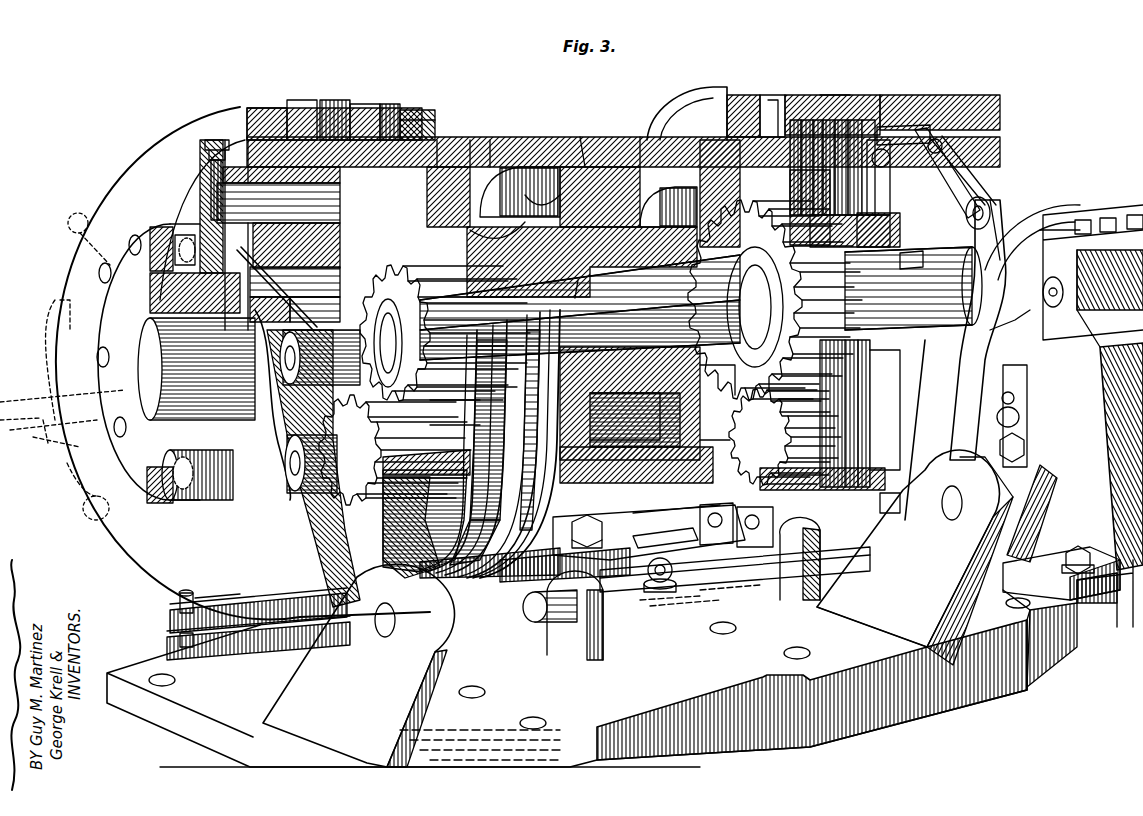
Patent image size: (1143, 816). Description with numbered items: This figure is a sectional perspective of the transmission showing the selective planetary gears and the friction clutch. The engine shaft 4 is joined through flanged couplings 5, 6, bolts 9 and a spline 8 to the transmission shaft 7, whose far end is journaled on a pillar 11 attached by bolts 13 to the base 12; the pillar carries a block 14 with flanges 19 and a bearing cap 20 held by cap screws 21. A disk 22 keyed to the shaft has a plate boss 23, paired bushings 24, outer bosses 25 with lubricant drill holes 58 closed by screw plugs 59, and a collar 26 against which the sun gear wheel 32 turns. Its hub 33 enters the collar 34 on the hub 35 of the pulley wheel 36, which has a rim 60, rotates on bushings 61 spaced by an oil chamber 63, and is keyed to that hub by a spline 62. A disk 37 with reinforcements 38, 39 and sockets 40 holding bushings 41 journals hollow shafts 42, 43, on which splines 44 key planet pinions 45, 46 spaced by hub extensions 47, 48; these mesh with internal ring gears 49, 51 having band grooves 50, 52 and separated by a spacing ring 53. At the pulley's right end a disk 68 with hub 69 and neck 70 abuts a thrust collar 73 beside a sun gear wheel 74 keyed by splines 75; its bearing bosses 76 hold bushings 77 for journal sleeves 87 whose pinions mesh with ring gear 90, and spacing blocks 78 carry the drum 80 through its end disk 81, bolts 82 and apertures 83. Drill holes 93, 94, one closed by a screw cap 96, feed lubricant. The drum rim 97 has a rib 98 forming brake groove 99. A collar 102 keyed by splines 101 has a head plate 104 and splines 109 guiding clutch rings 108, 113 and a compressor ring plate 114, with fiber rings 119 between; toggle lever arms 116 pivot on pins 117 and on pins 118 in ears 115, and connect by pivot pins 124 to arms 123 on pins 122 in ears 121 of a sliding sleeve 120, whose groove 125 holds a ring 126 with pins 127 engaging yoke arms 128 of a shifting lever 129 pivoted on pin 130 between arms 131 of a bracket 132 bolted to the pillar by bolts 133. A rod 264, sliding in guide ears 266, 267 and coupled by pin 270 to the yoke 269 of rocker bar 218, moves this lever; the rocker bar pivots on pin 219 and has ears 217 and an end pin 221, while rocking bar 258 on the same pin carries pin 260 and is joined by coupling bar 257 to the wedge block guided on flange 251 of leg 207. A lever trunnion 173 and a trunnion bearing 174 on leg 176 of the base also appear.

The phantom line 4 is at (20, 330).
The phantom coupling 5 is at (53, 389).
The housing boss 6 is at (150, 240).
The flange 7 is at (148, 383).
The hub 8 is at (170, 345).
The bolt holes 9 is at (85, 364).
The brake lever 11 is at (930, 375).
The base plate 12 is at (930, 705).
The nut 13 is at (1080, 546).
The bearing housing 14 is at (1093, 276).
The end plate 19 is at (1115, 456).
The bolt 20 is at (1110, 218).
The bolt 21 is at (1132, 214).
The housing wall 22 is at (240, 120).
The housing cover 23 is at (250, 112).
The housing side wall 24 is at (200, 183).
The stud 25 is at (215, 500).
The rod 26 is at (285, 296).
The pinion hub 32 is at (340, 325).
The opening 33 is at (497, 232).
The window 34 is at (510, 205).
The window rim 35 is at (542, 207).
The housing top 36 is at (560, 140).
The cap 37 is at (400, 112).
The cap flange 38 is at (400, 125).
The bolt 39 is at (470, 140).
The bolt 40 is at (492, 140).
The bolt 41 is at (440, 140).
The brake band 42 is at (275, 318).
The housing wall 43 is at (200, 198).
The gear hub 44 is at (290, 490).
The pinion 45 is at (500, 315).
The gear shaft 46 is at (470, 390).
The gear shaft 47 is at (471, 376).
The gear 48 is at (470, 410).
The pedestal 49 is at (270, 108).
The bolt 50 is at (300, 108).
The bolt 51 is at (392, 104).
The bolt 52 is at (366, 104).
The bolt 53 is at (333, 100).
The bolt shank 58 is at (210, 170).
The bolt head 59 is at (205, 140).
The housing joint 60 is at (600, 138).
The main shaft 61 is at (640, 280).
The collar 62 is at (380, 300).
The shaft section 63 is at (579, 299).
The dome cover 68 is at (705, 87).
The dome flange 69 is at (686, 119).
The housing rib 70 is at (640, 138).
The opening 73 is at (668, 207).
The output shaft 74 is at (872, 282).
The bearing collar 75 is at (735, 292).
The bearing block 76 is at (712, 420).
The bearing block 77 is at (715, 385).
The gear 78 is at (775, 300).
The cap 80 is at (930, 112).
The bracket 81 is at (805, 95).
The brake disc 82 is at (850, 120).
The cap bolt 83 is at (835, 95).
The bearing opening 87 is at (636, 419).
The cap block 90 is at (738, 95).
The lever plate 93 is at (700, 495).
The pin 94 is at (771, 104).
The slotted link 96 is at (700, 518).
The pinion 97 is at (850, 470).
The brake disc 98 is at (880, 120).
The pin 99 is at (775, 95).
The key 101 is at (910, 243).
The clutch disc 102 is at (865, 362).
The clutch plate 104 is at (820, 490).
The nut 108 is at (882, 495).
The sleeve 109 is at (915, 228).
The clutch disc 113 is at (862, 376).
The clutch disc 114 is at (862, 392).
The lever 115 is at (901, 137).
The link 116 is at (925, 130).
The hub 117 is at (915, 213).
The pivot pin 118 is at (948, 132).
The clutch disc 119 is at (862, 412).
The brake shoe 120 is at (1050, 222).
The arm 121 is at (995, 195).
The pivot 122 is at (990, 205).
The arm 123 is at (985, 157).
The arm 124 is at (968, 150).
The bracket 125 is at (1075, 225).
The brake shoe 126 is at (1025, 215).
The pin 127 is at (1058, 308).
The link 128 is at (1030, 345).
The lever 129 is at (962, 380).
The pin 130 is at (1020, 418).
The pin 131 is at (1015, 400).
The nut 132 is at (1026, 446).
The plate 133 is at (1028, 385).
The drum 173 is at (471, 444).
The pivot hole 174 is at (405, 622).
The support bracket 176 is at (330, 660).
The plate 207 is at (868, 618).
The rod 217 is at (740, 575).
The lever arm 218 is at (205, 598).
The nut 219 is at (582, 522).
The pin 221 is at (180, 600).
The support bracket 251 is at (975, 600).
The plate 257 is at (805, 575).
The lever bar 258 is at (245, 655).
The pin 260 is at (180, 638).
The rod end 264 is at (540, 624).
The link plate 266 is at (547, 640).
The plate 267 is at (830, 590).
The nut 269 is at (650, 585).
The washer 270 is at (660, 595).